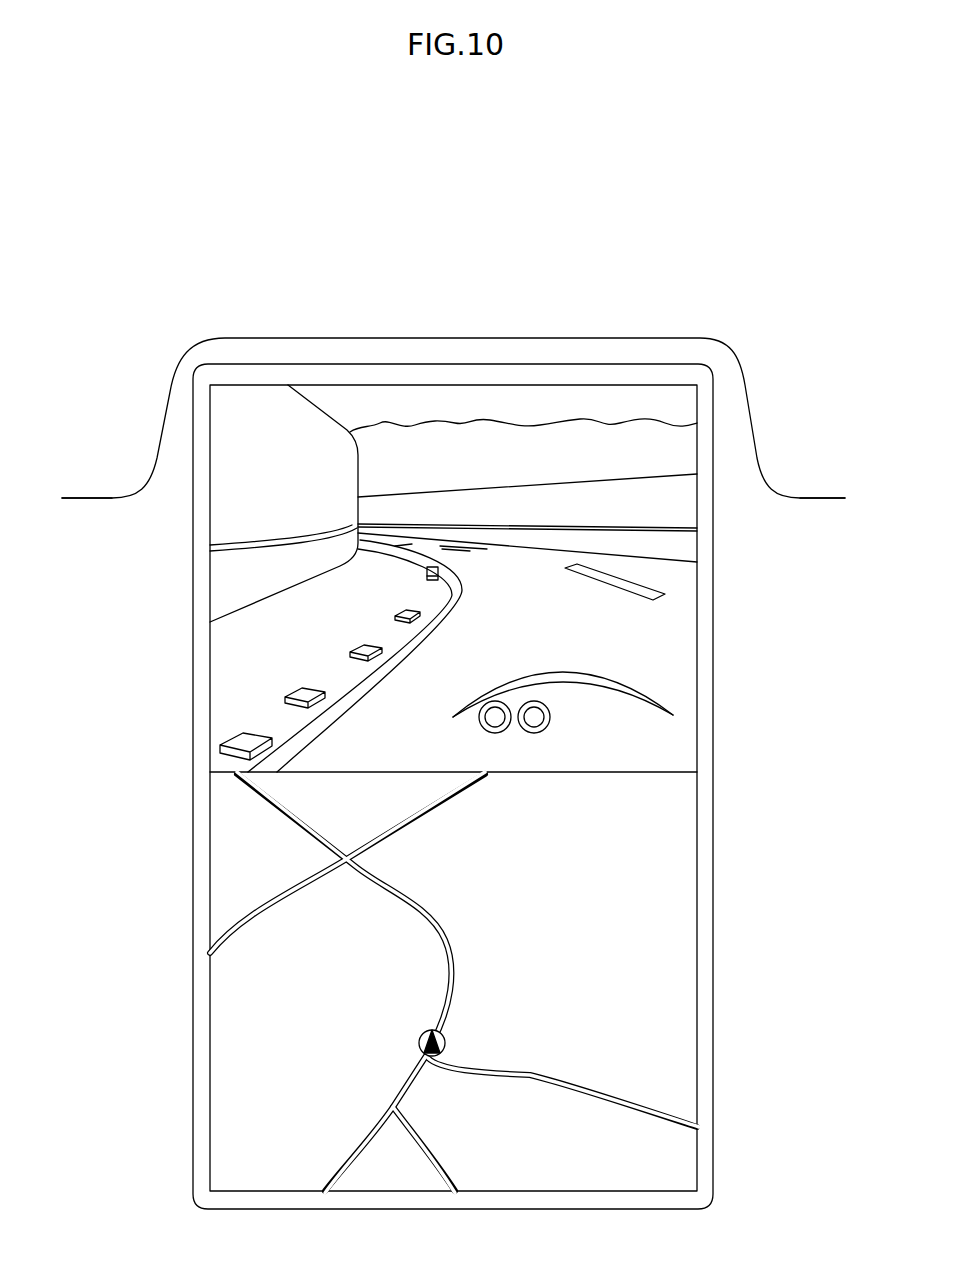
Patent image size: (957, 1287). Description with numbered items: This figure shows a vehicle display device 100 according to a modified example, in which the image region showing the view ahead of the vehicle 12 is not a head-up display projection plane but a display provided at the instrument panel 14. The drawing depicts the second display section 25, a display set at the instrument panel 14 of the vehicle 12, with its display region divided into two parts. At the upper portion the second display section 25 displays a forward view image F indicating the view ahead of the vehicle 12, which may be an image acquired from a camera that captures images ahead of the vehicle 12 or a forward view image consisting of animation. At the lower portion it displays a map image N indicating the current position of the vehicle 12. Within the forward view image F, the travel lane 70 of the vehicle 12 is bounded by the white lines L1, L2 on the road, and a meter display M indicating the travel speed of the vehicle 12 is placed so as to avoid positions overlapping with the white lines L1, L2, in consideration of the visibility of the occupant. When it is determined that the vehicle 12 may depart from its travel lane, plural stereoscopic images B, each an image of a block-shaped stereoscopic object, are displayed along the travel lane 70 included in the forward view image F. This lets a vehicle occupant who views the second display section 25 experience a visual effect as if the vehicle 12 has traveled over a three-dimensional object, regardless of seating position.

The vehicle 12 is at (270, 255).
The vehicle display device 100 is at (232, 308).
The instrument panel 14 is at (805, 497).
The second display section 25 is at (490, 362).
The travel lane 70 is at (536, 605).
The forward view image F is at (373, 407).
The white line L1 is at (428, 652).
The white line L2 is at (642, 583).
The meter display M is at (622, 680).
The stereoscopic image B is at (232, 735).
The map image N is at (648, 953).